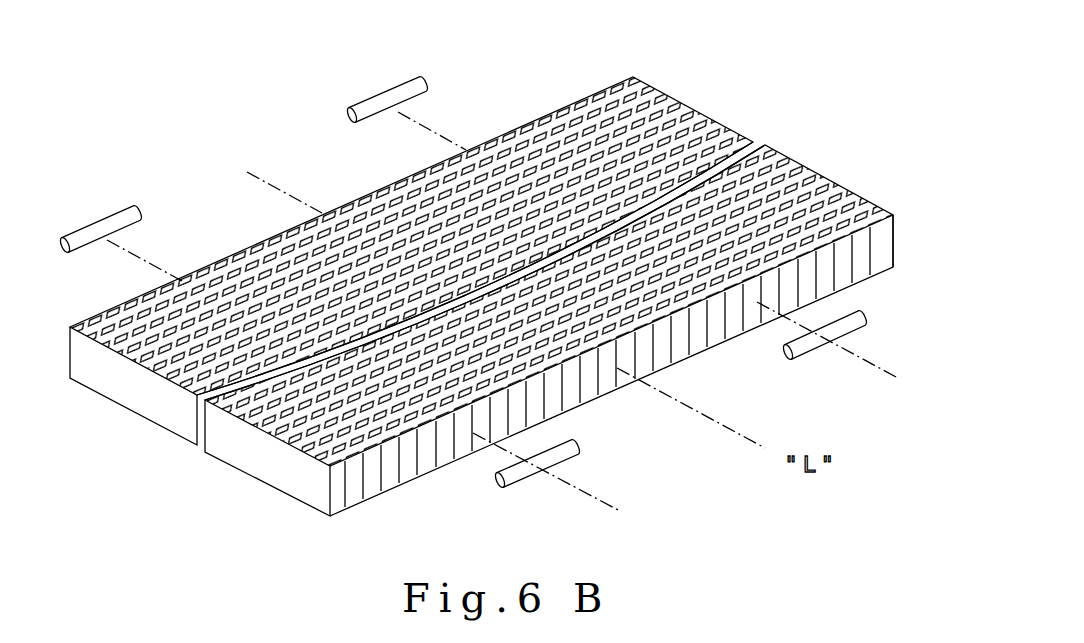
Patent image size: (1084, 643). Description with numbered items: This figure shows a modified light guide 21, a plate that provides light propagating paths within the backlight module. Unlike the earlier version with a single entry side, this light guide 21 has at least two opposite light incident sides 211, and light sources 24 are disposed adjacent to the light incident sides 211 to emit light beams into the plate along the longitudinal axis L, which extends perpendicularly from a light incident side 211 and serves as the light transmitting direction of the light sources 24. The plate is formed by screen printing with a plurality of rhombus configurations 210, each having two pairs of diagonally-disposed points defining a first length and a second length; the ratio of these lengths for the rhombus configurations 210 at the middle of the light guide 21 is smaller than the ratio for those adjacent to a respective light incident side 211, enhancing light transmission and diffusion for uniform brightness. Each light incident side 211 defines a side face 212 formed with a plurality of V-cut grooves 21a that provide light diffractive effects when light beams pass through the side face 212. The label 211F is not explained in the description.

The light guide 21 is at (504, 309).
The V-cut grooves 21a is at (887, 248).
The rhombus configurations 210 is at (380, 190).
The light incident side 211 is at (235, 246).
The cut end face 211F is at (181, 391).
The side face 212 is at (340, 496).
The light sources 24 is at (403, 88).